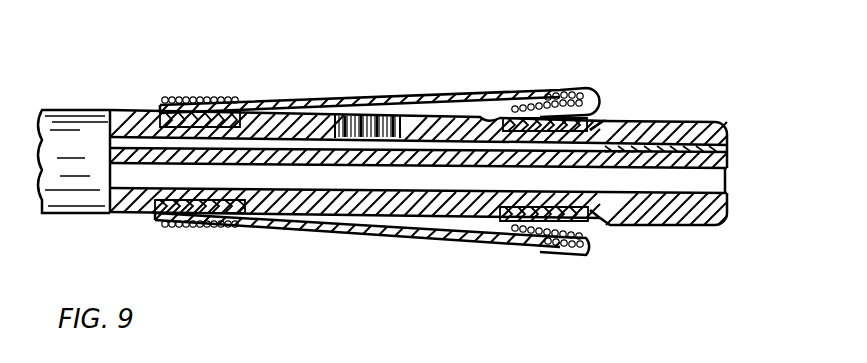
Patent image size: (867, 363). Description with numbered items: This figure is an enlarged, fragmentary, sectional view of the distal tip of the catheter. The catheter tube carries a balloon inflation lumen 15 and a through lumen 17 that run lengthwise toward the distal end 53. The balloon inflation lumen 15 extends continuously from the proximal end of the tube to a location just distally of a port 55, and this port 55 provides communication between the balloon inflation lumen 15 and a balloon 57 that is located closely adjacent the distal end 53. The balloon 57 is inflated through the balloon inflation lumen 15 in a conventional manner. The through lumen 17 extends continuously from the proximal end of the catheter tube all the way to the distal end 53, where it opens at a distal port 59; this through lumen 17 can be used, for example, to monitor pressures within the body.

The balloon inflation lumen 15 is at (142, 143).
The through lumen 17 is at (300, 176).
The distal end 53 is at (727, 158).
The port 55 is at (370, 128).
The balloon 57 is at (492, 240).
The distal port 59 is at (727, 180).